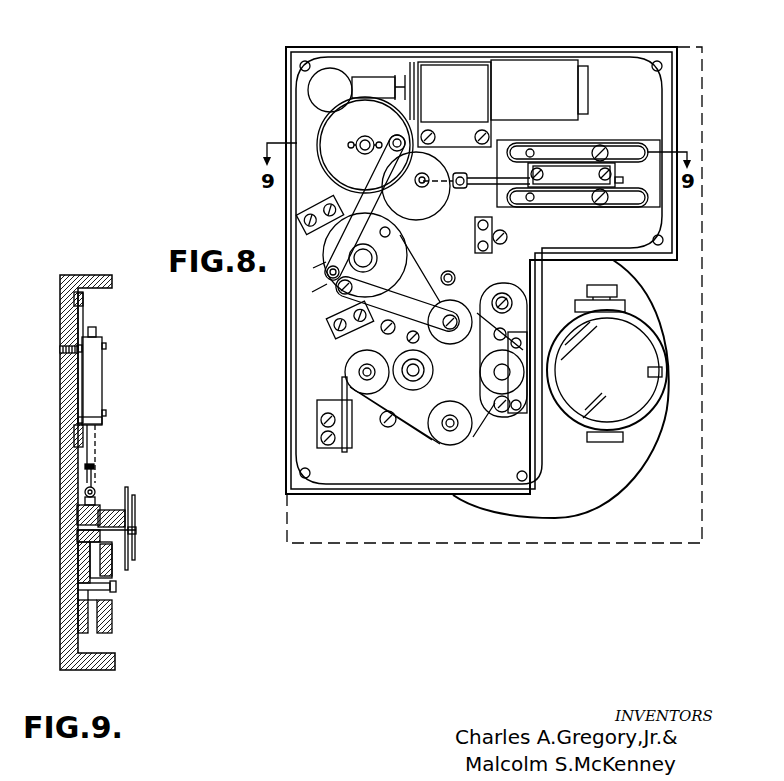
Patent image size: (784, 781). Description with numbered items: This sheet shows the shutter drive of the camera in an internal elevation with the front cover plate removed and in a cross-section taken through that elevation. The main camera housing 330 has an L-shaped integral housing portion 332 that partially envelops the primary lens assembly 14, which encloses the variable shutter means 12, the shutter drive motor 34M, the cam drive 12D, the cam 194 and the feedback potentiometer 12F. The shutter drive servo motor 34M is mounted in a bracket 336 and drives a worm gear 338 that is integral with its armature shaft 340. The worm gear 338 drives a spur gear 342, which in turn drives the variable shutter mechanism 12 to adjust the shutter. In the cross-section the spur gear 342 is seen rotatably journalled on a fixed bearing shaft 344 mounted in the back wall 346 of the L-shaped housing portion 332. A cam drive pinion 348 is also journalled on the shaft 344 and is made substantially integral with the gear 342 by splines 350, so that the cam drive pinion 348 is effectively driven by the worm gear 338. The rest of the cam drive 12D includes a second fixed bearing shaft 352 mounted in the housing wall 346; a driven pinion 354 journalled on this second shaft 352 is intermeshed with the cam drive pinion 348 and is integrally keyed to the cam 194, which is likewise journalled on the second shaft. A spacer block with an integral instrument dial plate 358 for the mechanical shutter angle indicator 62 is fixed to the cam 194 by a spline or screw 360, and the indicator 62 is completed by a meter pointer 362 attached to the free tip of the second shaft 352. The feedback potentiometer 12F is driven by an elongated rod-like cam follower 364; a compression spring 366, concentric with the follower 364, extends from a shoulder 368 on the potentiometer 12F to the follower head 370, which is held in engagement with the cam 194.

In FIG. 8, the variable shutter means 12 is at (344, 357).
In FIG. 8, the cam drive 12D is at (389, 88).
In FIG. 9, the cam drive 12D is at (54, 539).
In FIG. 8, the feedback potentiometer 12F is at (579, 152).
In FIG. 8, the primary lens assembly 14 is at (626, 352).
In FIG. 8, the shutter drive servo motor 34M is at (557, 106).
In FIG. 9, the mechanical shutter angle indicator 62 is at (150, 530).
In FIG. 8, the cam 194 is at (433, 213).
In FIG. 9, the cam 194 is at (95, 480).
In FIG. 8, the main camera housing 330 is at (700, 473).
In FIG. 8, the L-shaped integral housing portion 332 is at (683, 232).
In FIG. 8, the bracket 336 is at (473, 106).
In FIG. 8, the worm gear 338 is at (362, 76).
In FIG. 8, the armature shaft 340 is at (401, 80).
In FIG. 8, the spur gear 342 is at (377, 118).
In FIG. 9, the spur gear 342 is at (109, 620).
In FIG. 8, the fixed bearing shaft 344 is at (373, 151).
In FIG. 9, the fixed bearing shaft 344 is at (113, 591).
In FIG. 9, the back wall 346 is at (62, 630).
In FIG. 9, the cam drive pinion 348 is at (80, 560).
In FIG. 8, the splines 350 is at (356, 143).
In FIG. 9, the splines 350 is at (116, 583).
In FIG. 9, the second fixed bearing shaft 352 is at (77, 521).
In FIG. 9, the driven pinion 354 is at (110, 531).
In FIG. 9, the instrument dial plate 358 is at (128, 500).
In FIG. 9, the spline or screw 360 is at (115, 510).
In FIG. 9, the meter pointer 362 is at (135, 515).
In FIG. 8, the cam follower 364 is at (503, 200).
In FIG. 9, the cam follower 364 is at (86, 466).
In FIG. 8, the compression spring 366 is at (473, 191).
In FIG. 9, the compression spring 366 is at (97, 448).
In FIG. 8, the shoulder 368 is at (545, 189).
In FIG. 9, the shoulder 368 is at (91, 424).
In FIG. 8, the follower head 370 is at (456, 171).
In FIG. 9, the follower head 370 is at (85, 493).